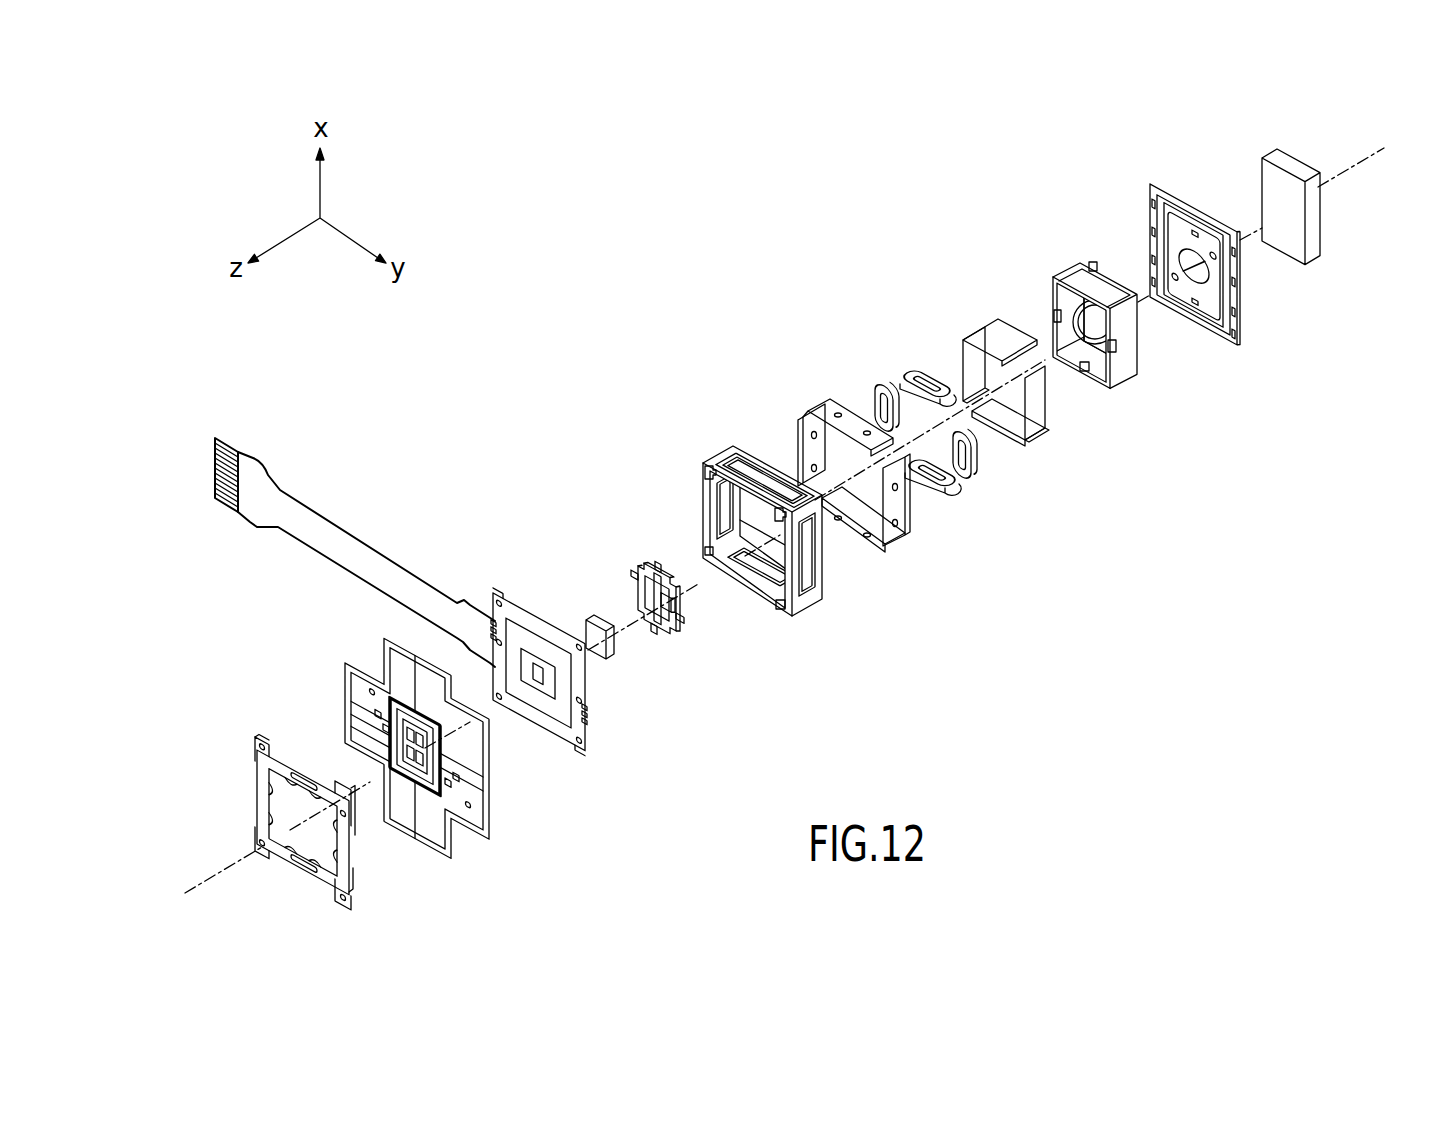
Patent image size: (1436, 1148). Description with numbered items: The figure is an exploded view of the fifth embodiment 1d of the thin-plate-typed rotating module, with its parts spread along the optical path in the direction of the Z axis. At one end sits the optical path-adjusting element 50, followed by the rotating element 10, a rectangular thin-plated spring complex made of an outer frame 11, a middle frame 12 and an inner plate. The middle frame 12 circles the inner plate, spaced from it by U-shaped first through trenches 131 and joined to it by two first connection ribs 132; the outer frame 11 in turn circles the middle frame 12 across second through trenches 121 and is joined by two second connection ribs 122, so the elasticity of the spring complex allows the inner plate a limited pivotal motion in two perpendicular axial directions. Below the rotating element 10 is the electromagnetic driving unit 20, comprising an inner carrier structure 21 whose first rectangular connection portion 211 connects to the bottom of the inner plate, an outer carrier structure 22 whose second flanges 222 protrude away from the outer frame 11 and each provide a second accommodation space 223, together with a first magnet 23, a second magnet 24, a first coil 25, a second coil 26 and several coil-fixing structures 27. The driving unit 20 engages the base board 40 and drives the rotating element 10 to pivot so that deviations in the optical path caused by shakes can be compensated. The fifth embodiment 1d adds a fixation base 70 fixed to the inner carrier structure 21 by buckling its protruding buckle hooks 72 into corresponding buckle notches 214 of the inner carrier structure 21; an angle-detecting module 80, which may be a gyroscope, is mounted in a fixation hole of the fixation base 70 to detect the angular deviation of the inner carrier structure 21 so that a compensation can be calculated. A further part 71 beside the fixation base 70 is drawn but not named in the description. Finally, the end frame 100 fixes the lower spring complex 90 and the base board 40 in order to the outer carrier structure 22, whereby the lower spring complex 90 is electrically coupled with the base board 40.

The thin-plate-typed rotating module (fifth embodiment) 1d is at (609, 322).
The rotating element 10 is at (1150, 172).
The outer frame 11 is at (1240, 262).
The middle frame 12 is at (1227, 297).
The second through trench 121 is at (1237, 327).
The second connection ribs 122 is at (1158, 243).
The first through trench 131 is at (1207, 225).
The first connection ribs 132 is at (1197, 323).
The driving unit 20 is at (1043, 160).
The inner carrier structure 21 is at (1073, 262).
The first rectangular connection portion 211 is at (1112, 277).
The buckle notches 214 is at (1093, 264).
The outer carrier structure 22 is at (710, 463).
The second flanges 222 is at (737, 450).
The second accommodation space 223 is at (718, 503).
The first magnet 23 is at (965, 337).
The second magnet 24 is at (997, 333).
The first coil 25 is at (877, 388).
The second coil 26 is at (917, 367).
The coil-fixing structures 27 is at (827, 407).
The base board 40 is at (481, 578).
The optical path-adjusting element 50 is at (1258, 146).
The fixation base 70 is at (635, 543).
The sensing element 71 is at (675, 630).
The buckle hooks 72 is at (660, 555).
The angle-detecting module 80 is at (581, 601).
The lower spring complex 90 is at (333, 644).
The end frame 100 is at (251, 729).